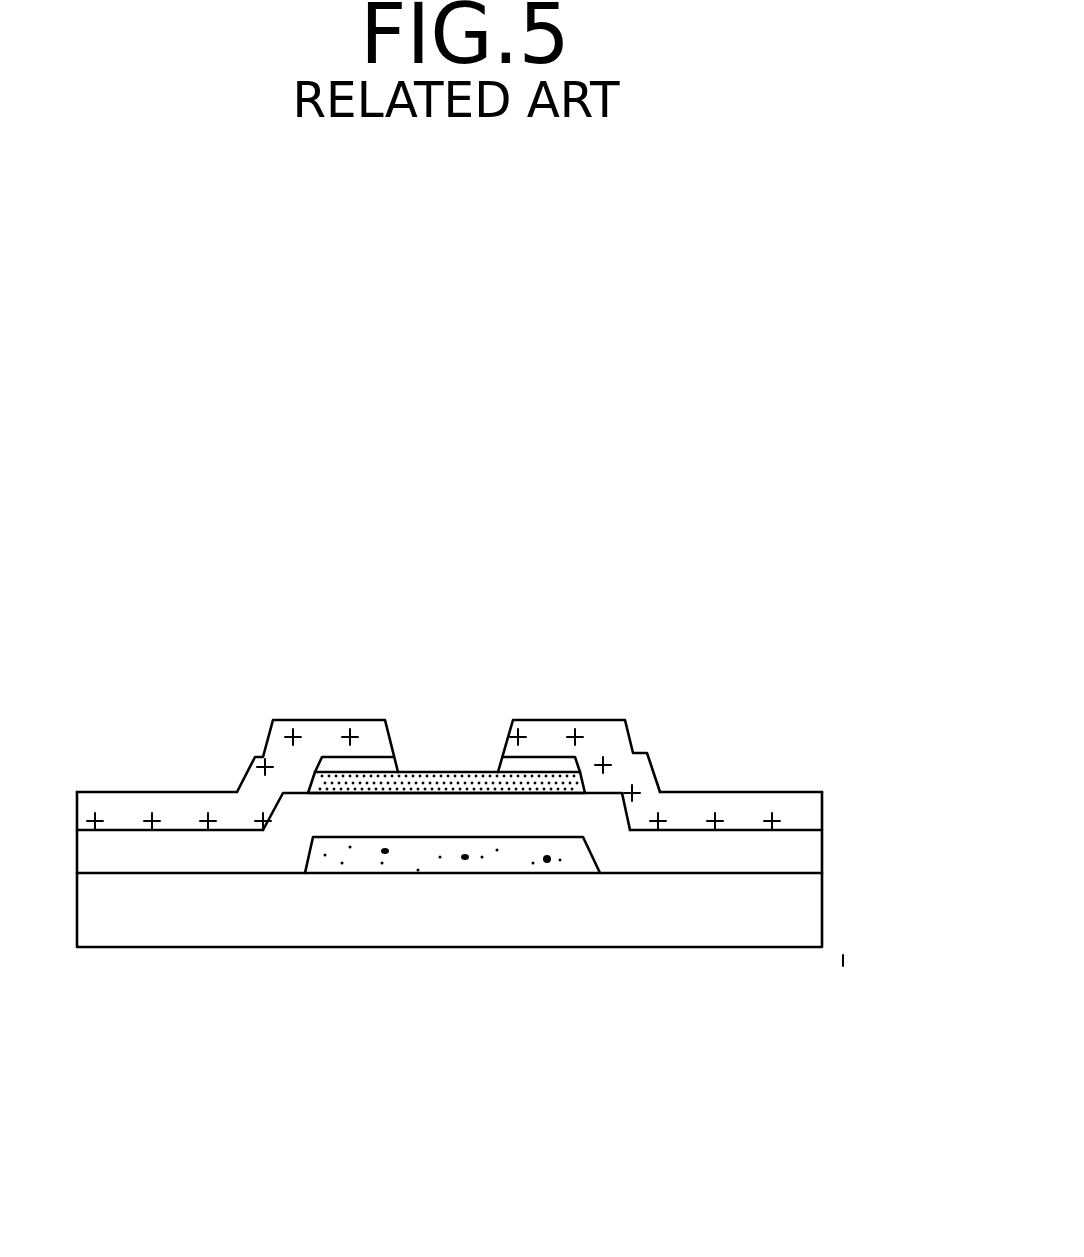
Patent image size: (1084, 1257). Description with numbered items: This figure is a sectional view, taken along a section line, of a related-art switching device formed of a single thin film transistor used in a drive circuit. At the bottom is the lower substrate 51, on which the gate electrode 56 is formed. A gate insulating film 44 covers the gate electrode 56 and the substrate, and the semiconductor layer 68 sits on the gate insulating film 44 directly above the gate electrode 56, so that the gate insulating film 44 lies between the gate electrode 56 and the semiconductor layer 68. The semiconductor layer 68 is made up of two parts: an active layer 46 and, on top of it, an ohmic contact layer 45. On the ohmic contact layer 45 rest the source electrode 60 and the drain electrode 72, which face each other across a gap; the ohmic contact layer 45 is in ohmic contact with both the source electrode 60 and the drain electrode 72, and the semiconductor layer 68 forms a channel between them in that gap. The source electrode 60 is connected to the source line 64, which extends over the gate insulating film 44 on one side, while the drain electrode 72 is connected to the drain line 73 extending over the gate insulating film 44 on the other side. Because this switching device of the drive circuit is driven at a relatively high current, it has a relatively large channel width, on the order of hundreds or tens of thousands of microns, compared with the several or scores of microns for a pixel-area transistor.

The gate insulating film 44 is at (807, 857).
The ohmic contact layer 45 is at (365, 762).
The active layer 46 is at (377, 780).
The lower substrate 51 is at (685, 933).
The gate electrode 56 is at (510, 858).
The source electrode 60 is at (322, 722).
The source line 64 is at (138, 822).
The semiconductor layer 68 is at (373, 1048).
The drain electrode 72 is at (597, 722).
The drain line 73 is at (772, 793).